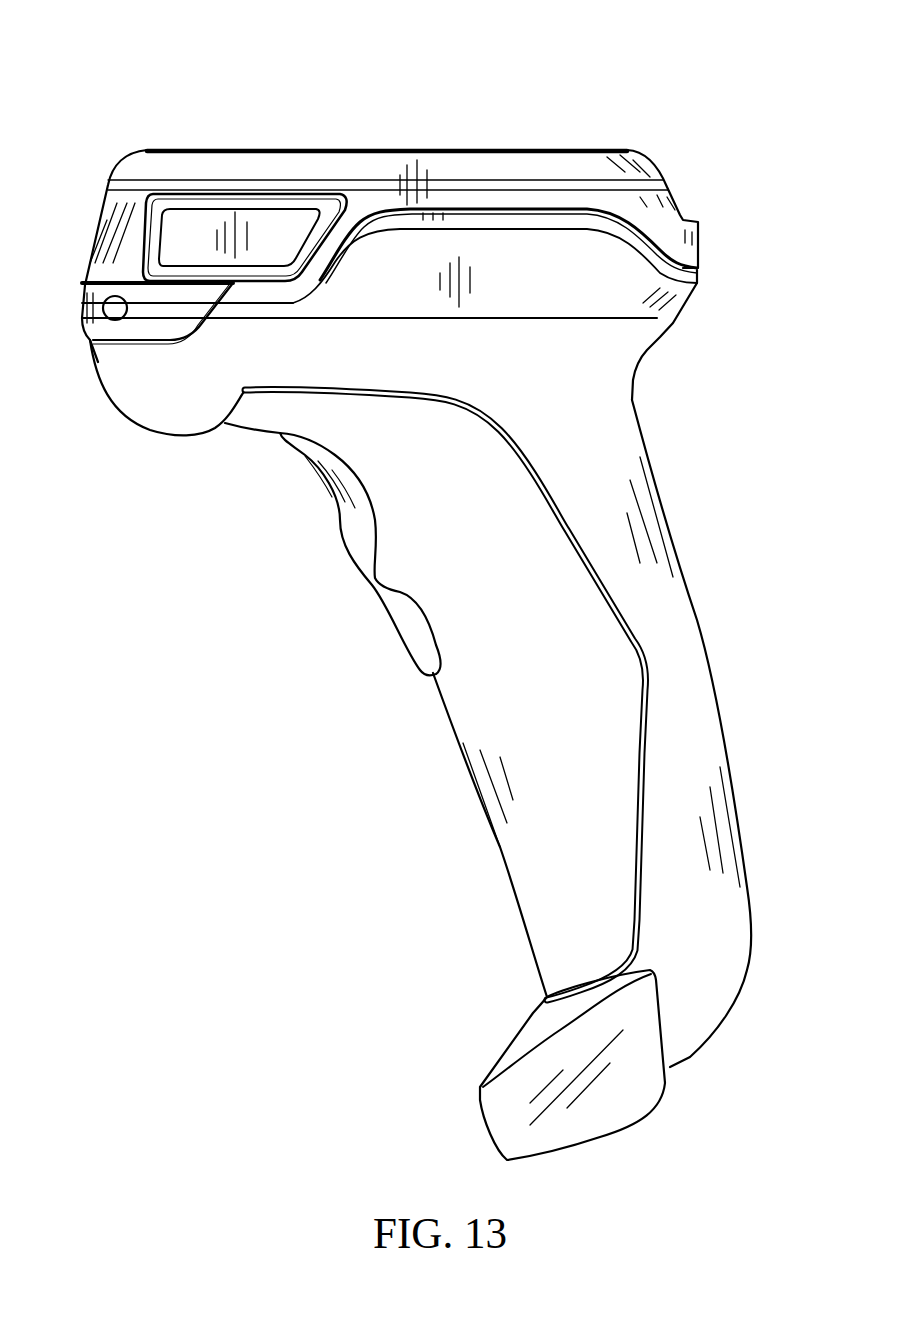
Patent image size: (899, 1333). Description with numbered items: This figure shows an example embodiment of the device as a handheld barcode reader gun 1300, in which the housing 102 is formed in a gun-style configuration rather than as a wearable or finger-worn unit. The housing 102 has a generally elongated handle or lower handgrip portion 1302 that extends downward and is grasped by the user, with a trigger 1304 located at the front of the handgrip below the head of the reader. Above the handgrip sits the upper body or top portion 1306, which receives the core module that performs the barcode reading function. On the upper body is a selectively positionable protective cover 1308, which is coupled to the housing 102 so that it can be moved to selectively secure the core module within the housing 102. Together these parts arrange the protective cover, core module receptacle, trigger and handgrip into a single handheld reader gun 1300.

The handheld barcode reader gun 1300 is at (417, 585).
The housing 102 is at (413, 240).
The selectively positionable protective cover 1308 is at (146, 160).
The upper body or top portion 1306 is at (647, 291).
The trigger 1304 is at (343, 562).
The lower handgrip portion 1302 is at (448, 750).